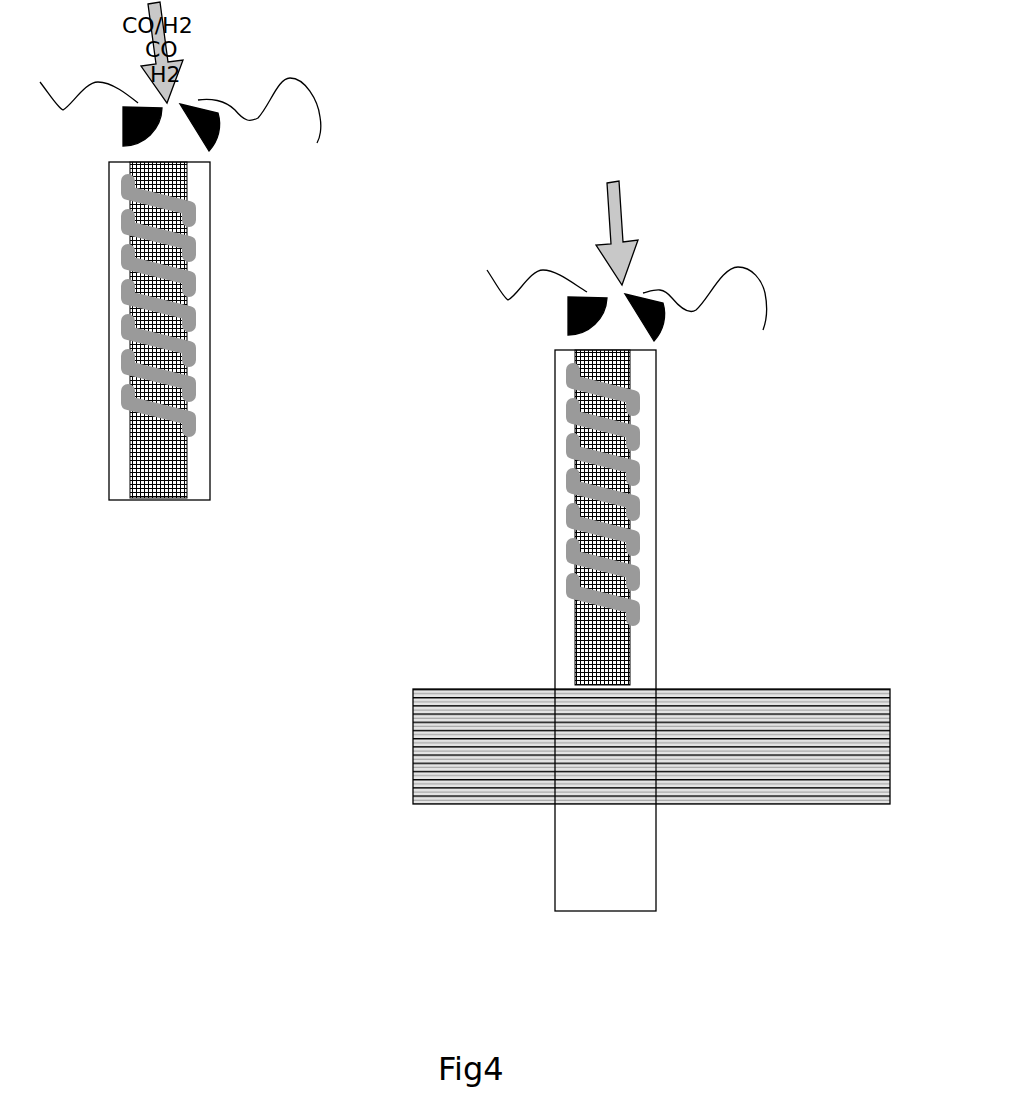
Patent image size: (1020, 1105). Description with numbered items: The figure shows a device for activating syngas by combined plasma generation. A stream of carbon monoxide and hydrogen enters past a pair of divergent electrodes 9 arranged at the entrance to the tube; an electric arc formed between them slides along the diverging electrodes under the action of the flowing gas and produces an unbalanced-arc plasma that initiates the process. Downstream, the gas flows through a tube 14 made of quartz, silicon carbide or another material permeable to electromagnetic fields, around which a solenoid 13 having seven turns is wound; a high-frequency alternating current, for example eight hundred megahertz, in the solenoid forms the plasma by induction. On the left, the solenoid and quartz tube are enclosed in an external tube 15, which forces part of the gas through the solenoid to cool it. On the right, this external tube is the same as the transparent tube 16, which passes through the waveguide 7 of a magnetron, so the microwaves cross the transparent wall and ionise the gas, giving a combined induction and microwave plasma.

The waveguide 7 is at (741, 672).
The divergent electrodes 9 is at (665, 263).
The solenoid 13 is at (556, 440).
The tube permeable to electromagnetic fields 14 is at (550, 622).
The external tube 15 is at (230, 224).
The transparent tube 16 is at (532, 878).